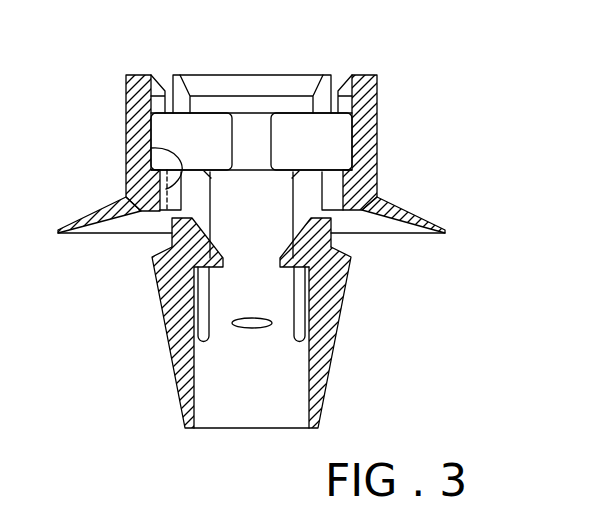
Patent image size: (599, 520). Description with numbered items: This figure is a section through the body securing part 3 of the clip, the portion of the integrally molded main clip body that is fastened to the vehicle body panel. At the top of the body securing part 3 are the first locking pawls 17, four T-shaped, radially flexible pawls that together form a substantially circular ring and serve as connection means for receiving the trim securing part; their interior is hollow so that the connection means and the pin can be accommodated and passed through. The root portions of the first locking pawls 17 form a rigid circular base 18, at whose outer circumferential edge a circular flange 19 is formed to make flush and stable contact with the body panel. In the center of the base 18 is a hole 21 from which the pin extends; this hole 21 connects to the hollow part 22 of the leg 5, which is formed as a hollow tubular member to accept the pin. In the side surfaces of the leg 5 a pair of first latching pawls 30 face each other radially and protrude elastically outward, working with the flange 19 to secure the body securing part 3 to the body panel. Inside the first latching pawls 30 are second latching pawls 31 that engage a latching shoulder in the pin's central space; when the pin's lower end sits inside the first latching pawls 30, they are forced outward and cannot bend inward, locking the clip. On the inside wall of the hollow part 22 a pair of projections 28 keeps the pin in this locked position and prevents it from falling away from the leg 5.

The body securing part 3 is at (387, 145).
The leg 5 is at (332, 357).
The first locking pawls 17 is at (237, 88).
The base 18 is at (151, 148).
The flange 19 is at (84, 229).
The hole 21 is at (296, 206).
The hollow part 22 is at (223, 290).
The projections 28 is at (252, 328).
The first latching pawls 30 is at (200, 272).
The second latching pawls 31 is at (197, 270).